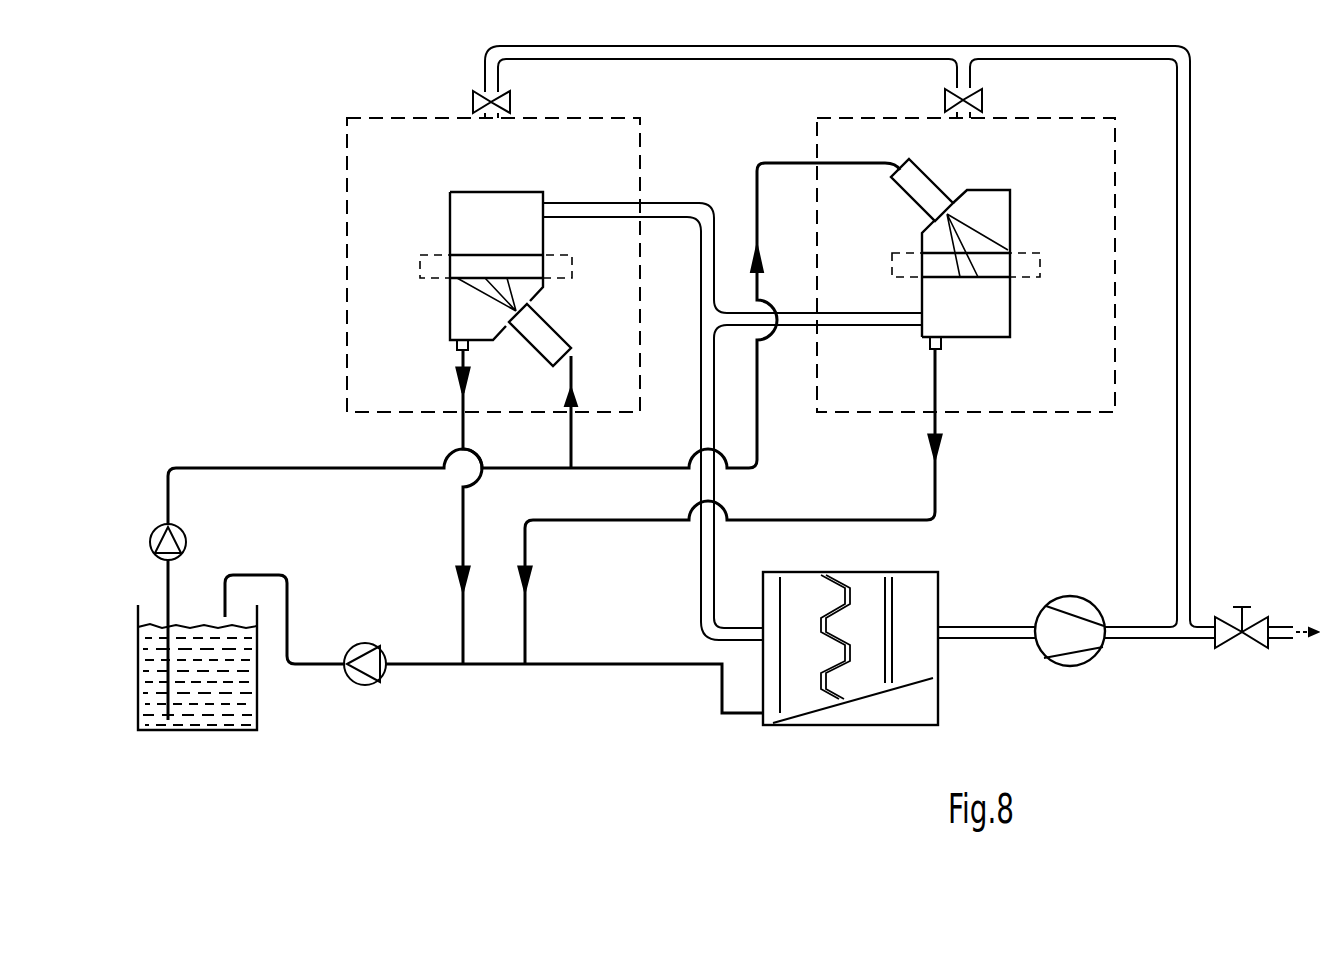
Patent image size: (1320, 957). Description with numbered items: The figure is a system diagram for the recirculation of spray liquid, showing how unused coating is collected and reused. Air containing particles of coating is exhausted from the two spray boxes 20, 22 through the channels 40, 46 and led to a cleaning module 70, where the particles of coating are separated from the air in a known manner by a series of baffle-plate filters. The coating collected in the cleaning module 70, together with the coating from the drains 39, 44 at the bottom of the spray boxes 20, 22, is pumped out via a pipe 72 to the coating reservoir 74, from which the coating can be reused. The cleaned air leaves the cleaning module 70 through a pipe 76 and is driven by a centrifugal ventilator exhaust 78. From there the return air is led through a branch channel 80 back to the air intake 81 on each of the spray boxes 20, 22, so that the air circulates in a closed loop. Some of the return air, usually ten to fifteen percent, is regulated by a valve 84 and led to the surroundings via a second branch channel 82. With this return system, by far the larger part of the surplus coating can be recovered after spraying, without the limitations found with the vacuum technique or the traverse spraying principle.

The spray box 20 is at (510, 234).
The spray box 22 is at (979, 319).
The drain 39 is at (457, 346).
The channel 40 is at (618, 210).
The drain 44 is at (940, 350).
The channel 46 is at (887, 322).
The cleaning module 70 is at (881, 644).
The pipe 72 is at (612, 662).
The coating reservoir 74 is at (250, 710).
The pipe 76 is at (968, 627).
The centrifugal ventilator exhaust 78 is at (1050, 652).
The branch channel 80 is at (1180, 403).
The air intake 81 is at (493, 117).
The second branch channel 82 is at (1282, 640).
The valve 84 is at (1244, 624).